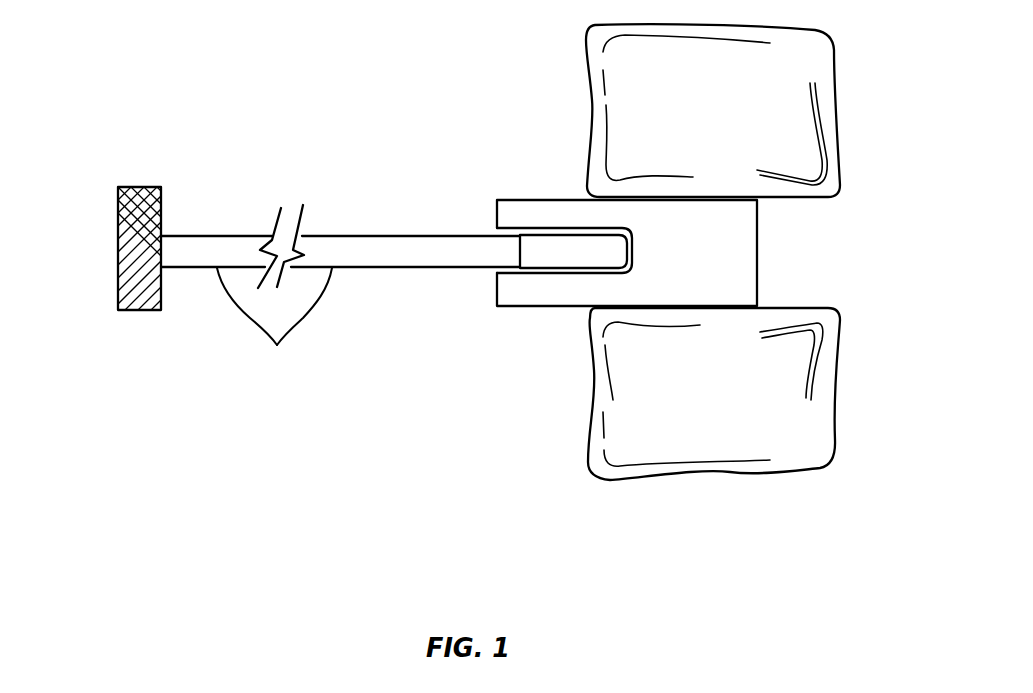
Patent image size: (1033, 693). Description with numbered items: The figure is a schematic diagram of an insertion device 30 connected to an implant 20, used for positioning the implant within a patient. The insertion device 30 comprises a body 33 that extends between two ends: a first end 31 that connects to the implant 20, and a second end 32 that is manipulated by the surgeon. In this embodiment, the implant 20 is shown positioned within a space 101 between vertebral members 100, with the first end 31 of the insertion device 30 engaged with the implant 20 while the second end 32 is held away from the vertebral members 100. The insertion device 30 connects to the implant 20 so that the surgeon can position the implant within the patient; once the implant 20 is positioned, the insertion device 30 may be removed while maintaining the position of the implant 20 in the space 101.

The implant 20 is at (533, 314).
The insertion device 30 is at (252, 142).
The first end 31 is at (513, 252).
The second end 32 is at (118, 212).
The body 33 is at (277, 345).
The vertebral members 100 is at (767, 113).
The space 101 is at (797, 242).